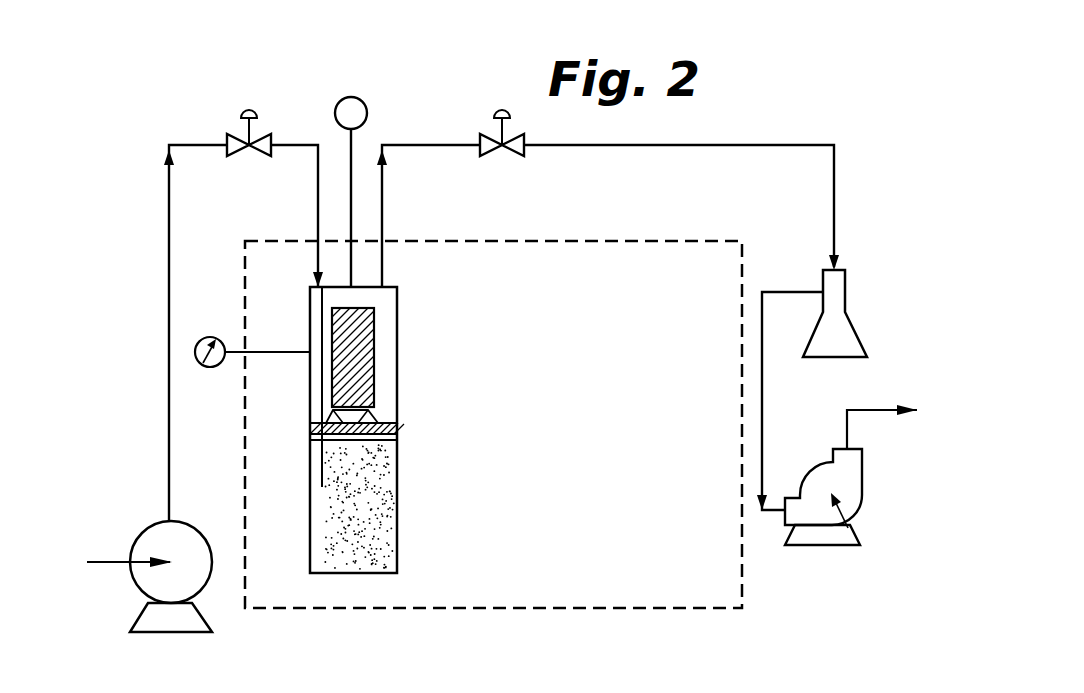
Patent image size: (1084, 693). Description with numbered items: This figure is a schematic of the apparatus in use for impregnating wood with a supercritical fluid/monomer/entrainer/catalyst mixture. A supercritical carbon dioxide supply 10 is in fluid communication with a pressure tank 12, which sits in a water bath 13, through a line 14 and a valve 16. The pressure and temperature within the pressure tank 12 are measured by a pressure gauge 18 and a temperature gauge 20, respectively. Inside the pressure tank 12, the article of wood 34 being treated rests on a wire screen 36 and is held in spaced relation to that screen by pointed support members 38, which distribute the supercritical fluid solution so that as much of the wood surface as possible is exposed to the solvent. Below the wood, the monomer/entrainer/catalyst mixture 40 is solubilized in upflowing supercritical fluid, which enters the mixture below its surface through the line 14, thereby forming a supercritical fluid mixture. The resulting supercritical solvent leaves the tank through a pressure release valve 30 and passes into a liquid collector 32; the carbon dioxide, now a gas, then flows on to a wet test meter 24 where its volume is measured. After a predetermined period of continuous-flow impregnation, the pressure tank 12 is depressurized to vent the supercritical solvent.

The supercritical carbon dioxide supply 10 is at (140, 518).
The pressure tank 12 is at (398, 530).
The water bath 13 is at (590, 230).
The line 14 is at (169, 316).
The valve 16 is at (232, 140).
The pressure gauge 18 is at (210, 368).
The temperature gauge 20 is at (343, 98).
The wet test meter 24 is at (855, 470).
The pressure release valve 30 is at (530, 137).
The liquid collector 32 is at (823, 316).
The article of wood 34 is at (365, 347).
The wire screen 36 is at (398, 430).
The pointed support members 38 is at (335, 418).
The monomer/entrainer/catalyst mixture 40 is at (370, 490).